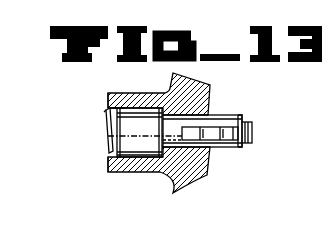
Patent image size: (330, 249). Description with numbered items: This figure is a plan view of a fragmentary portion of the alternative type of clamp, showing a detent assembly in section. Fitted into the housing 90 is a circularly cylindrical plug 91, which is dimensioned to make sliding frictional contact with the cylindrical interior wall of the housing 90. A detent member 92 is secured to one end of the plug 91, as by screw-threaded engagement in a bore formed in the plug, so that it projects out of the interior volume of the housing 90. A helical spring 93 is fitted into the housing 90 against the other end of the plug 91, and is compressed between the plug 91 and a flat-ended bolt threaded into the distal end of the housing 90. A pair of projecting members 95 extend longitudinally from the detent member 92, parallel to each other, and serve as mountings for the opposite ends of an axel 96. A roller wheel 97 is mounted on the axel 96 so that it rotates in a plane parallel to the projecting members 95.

The housing 90 is at (111, 172).
The circularly cylindrical plug 91 is at (119, 108).
The detent member 92 is at (170, 132).
The helical spring 93 is at (106, 123).
The projecting members 95 is at (246, 121).
The axel 96 is at (221, 126).
The roller wheel 97 is at (255, 132).